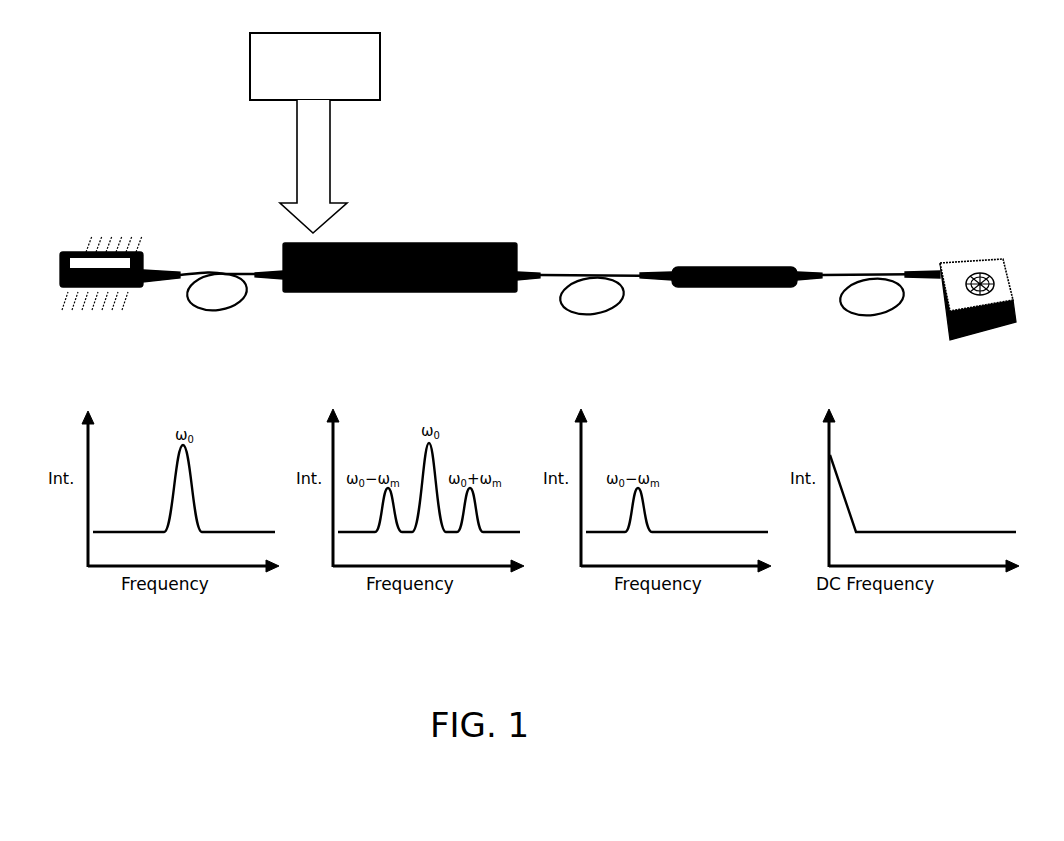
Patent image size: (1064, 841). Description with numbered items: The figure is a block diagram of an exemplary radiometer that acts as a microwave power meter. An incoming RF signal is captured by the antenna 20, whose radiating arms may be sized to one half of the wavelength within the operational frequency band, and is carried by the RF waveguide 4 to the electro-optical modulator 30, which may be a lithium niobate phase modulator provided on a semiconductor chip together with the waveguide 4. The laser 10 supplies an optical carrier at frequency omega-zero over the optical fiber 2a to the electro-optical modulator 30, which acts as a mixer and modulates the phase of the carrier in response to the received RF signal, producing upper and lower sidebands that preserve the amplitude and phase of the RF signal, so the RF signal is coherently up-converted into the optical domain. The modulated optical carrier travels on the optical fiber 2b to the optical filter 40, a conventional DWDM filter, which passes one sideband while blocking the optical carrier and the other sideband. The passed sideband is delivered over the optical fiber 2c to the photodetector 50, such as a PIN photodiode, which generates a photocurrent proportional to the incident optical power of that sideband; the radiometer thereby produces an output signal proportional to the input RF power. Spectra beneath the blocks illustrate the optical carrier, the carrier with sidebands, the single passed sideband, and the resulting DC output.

The laser 10 is at (130, 309).
The antenna 20 is at (335, 66).
The RF waveguide 4 is at (307, 166).
The optical fiber 2a is at (231, 273).
The optical fiber 2b is at (606, 276).
The optical fiber 2c is at (881, 277).
The electro-optical modulator 30 is at (411, 312).
The optical filter 40 is at (718, 324).
The photodetector 50 is at (938, 322).